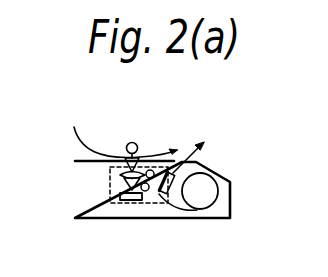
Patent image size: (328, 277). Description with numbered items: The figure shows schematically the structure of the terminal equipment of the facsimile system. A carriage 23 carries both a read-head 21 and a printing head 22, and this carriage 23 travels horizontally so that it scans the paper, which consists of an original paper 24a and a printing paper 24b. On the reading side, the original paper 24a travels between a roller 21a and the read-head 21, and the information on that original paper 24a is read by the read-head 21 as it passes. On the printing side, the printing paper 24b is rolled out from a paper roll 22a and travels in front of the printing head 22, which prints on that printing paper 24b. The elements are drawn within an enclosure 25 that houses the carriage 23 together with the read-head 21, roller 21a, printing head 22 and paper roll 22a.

The read-head 21 is at (112, 187).
The roller 21a is at (137, 144).
The printing head 22 is at (162, 191).
The paper roll 22a is at (203, 205).
The carriage 23 is at (127, 201).
The original paper 24a is at (74, 127).
The printing paper 24b is at (207, 146).
The housing 25 is at (231, 201).